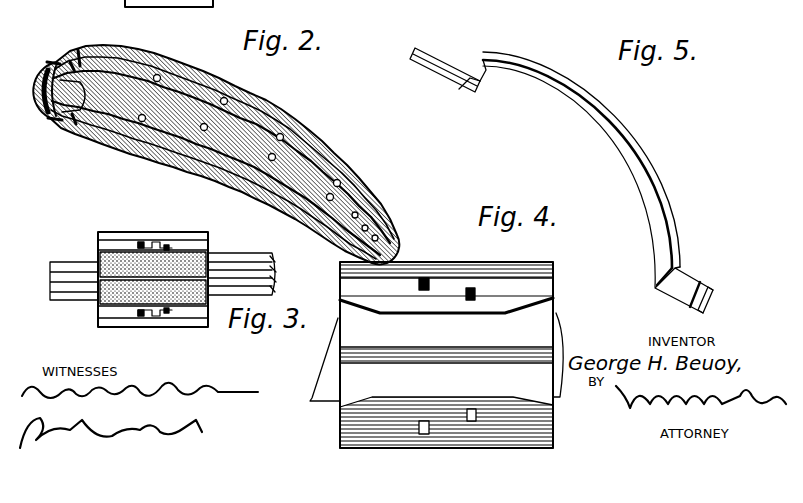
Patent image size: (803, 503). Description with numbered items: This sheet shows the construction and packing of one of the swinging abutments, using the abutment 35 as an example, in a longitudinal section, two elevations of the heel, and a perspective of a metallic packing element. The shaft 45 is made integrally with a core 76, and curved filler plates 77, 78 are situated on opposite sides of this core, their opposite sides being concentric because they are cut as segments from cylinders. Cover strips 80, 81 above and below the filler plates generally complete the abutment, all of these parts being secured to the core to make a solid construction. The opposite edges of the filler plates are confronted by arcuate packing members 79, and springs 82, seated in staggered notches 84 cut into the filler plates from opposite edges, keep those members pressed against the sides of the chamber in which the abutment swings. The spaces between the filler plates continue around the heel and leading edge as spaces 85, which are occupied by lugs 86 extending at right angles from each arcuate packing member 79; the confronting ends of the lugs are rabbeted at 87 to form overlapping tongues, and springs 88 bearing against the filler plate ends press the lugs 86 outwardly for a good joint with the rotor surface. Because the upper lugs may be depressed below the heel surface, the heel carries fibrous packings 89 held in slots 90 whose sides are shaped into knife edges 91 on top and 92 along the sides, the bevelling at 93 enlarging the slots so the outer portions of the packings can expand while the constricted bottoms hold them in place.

In FIG. 2, the abutment 35 is at (216, 154).
In FIG. 4, the abutment 35 is at (552, 251).
In FIG. 2, the shaft 45 is at (152, 52).
In FIG. 4, the shaft 45 is at (322, 376).
In FIG. 3, the shaft 45 is at (68, 302).
In FIG. 2, the core 76 is at (196, 86).
In FIG. 2, the filler plate 77 is at (306, 140).
In FIG. 2, the filler plate 78 is at (304, 197).
In FIG. 5, the arcuate packing member 79 is at (624, 130).
In FIG. 2, the cover strip 80 is at (150, 55).
In FIG. 2, the cover strip 81 is at (140, 142).
In FIG. 2, the spring 82 is at (252, 170).
In FIG. 2, the notch 84 is at (246, 92).
In FIG. 2, the space 85 is at (82, 50).
In FIG. 2, the lug 86 is at (62, 128).
In FIG. 5, the lug 86 is at (690, 280).
In FIG. 4, the lug 86 is at (388, 412).
In FIG. 3, the lug 86 is at (108, 246).
In FIG. 5, the rabbet 87 is at (470, 90).
In FIG. 4, the rabbet 87 is at (448, 425).
In FIG. 3, the rabbet 87 is at (152, 246).
In FIG. 2, the spring 88 is at (350, 230).
In FIG. 2, the fibrous packing 89 is at (50, 98).
In FIG. 3, the fibrous packing 89 is at (96, 276).
In FIG. 2, the slot 90 is at (86, 134).
In FIG. 4, the slot 90 is at (538, 322).
In FIG. 2, the knife edge 91 is at (47, 64).
In FIG. 4, the knife edge 91 is at (398, 300).
In FIG. 4, the knife edge 92 is at (338, 300).
In FIG. 2, the bevel 93 is at (72, 64).
In FIG. 4, the bevel 93 is at (440, 306).